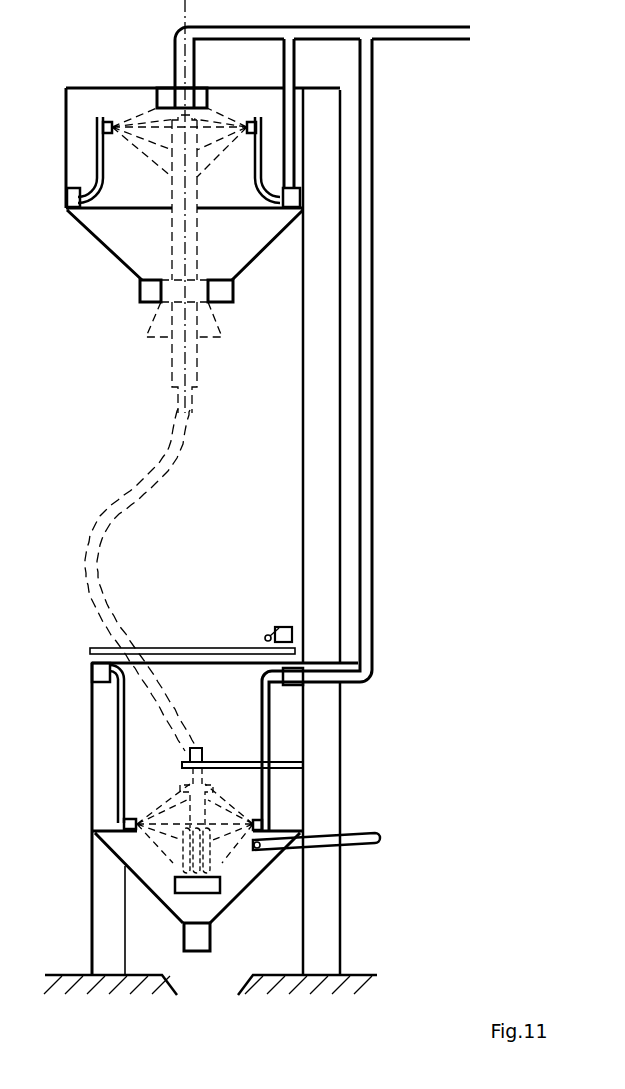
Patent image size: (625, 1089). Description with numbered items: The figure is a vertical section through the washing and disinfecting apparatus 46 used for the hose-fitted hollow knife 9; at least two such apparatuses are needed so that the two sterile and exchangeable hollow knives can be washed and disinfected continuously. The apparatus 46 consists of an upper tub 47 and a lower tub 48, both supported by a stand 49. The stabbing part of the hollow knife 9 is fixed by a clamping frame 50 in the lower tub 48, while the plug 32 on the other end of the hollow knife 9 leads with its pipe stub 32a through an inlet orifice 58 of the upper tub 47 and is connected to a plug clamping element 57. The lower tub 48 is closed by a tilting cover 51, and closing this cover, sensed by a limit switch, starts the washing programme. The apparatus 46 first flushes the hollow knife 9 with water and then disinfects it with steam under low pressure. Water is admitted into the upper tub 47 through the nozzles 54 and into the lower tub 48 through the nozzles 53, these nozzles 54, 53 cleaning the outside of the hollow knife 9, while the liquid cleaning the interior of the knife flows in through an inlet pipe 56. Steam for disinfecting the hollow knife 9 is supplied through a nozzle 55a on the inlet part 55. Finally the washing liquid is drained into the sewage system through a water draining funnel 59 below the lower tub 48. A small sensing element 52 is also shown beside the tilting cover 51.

The upper tub 47 is at (83, 103).
The inlet pipe 56 is at (183, 62).
The nozzles 54 is at (102, 130).
The pipe stub 32a is at (180, 218).
The plug clamping element 57 is at (150, 290).
The inlet orifice 58 is at (202, 290).
The plug 32 is at (163, 333).
The washing and disinfecting apparatus 46 is at (325, 317).
The stand 49 is at (325, 423).
The tilting cover 51 is at (243, 650).
The sensor 52 is at (285, 627).
The clamping frame 50 is at (283, 758).
The lower tub 48 is at (288, 793).
The nozzles 53 is at (125, 818).
The hollow knife 9 is at (125, 833).
The inlet part 55 is at (375, 838).
The nozzle 55a is at (262, 855).
The water draining funnel 59 is at (213, 982).